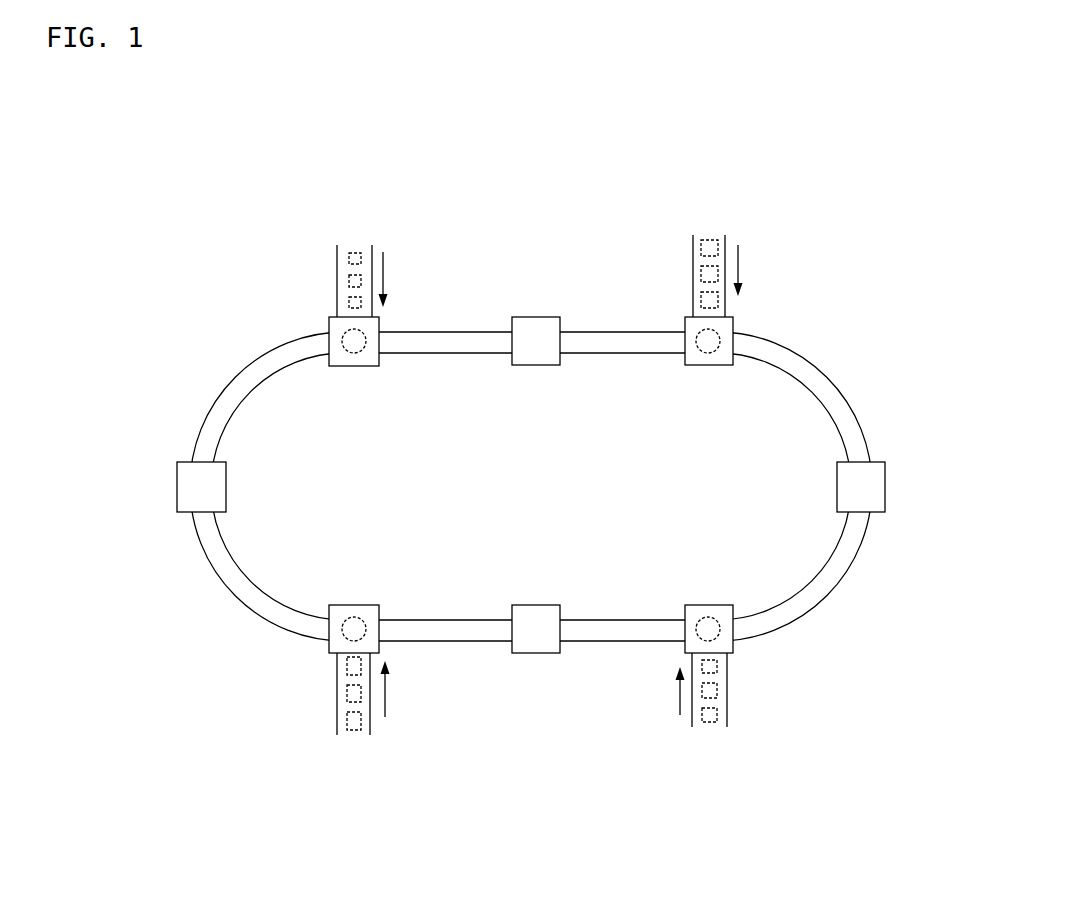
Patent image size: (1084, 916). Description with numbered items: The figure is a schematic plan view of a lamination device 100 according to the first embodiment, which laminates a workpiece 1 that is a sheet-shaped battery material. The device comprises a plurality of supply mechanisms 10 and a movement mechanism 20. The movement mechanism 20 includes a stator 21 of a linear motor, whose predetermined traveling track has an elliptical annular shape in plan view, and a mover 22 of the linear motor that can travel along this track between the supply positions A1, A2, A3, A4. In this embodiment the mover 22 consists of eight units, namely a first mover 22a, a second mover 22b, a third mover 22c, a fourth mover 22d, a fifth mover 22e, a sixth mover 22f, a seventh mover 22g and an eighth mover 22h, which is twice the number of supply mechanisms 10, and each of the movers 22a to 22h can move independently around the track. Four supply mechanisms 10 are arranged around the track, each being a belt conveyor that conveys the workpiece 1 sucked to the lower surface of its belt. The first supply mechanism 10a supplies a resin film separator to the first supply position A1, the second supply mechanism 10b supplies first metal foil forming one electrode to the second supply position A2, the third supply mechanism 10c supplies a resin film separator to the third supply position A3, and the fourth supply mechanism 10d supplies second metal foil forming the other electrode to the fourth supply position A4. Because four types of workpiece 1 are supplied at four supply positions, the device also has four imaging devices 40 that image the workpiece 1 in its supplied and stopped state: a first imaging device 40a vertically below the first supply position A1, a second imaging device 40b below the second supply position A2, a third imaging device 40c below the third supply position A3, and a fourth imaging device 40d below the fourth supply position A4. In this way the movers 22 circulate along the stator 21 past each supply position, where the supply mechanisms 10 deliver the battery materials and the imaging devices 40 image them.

The lamination device 100 is at (810, 236).
The workpiece 1 is at (355, 253).
The supply mechanism 10 is at (528, 464).
The first supply mechanism 10a is at (337, 700).
The second supply mechanism 10b is at (337, 272).
The third supply mechanism 10c is at (693, 265).
The fourth supply mechanism 10d is at (727, 707).
The movement mechanism 20 is at (841, 365).
The stator 21 is at (837, 593).
The mover 22 is at (543, 490).
The first mover 22a is at (343, 605).
The second mover 22b is at (178, 462).
The third mover 22c is at (381, 320).
The fourth mover 22d is at (520, 317).
The fifth mover 22e is at (685, 320).
The sixth mover 22f is at (885, 480).
The seventh mover 22g is at (685, 650).
The eighth mover 22h is at (533, 653).
The imaging device 40 is at (532, 485).
The first imaging device 40a is at (355, 617).
The second imaging device 40b is at (358, 353).
The third imaging device 40c is at (708, 354).
The fourth imaging device 40d is at (708, 617).
The first supply position A1 is at (319, 662).
The second supply position A2 is at (320, 317).
The third supply position A3 is at (750, 318).
The fourth supply position A4 is at (749, 651).